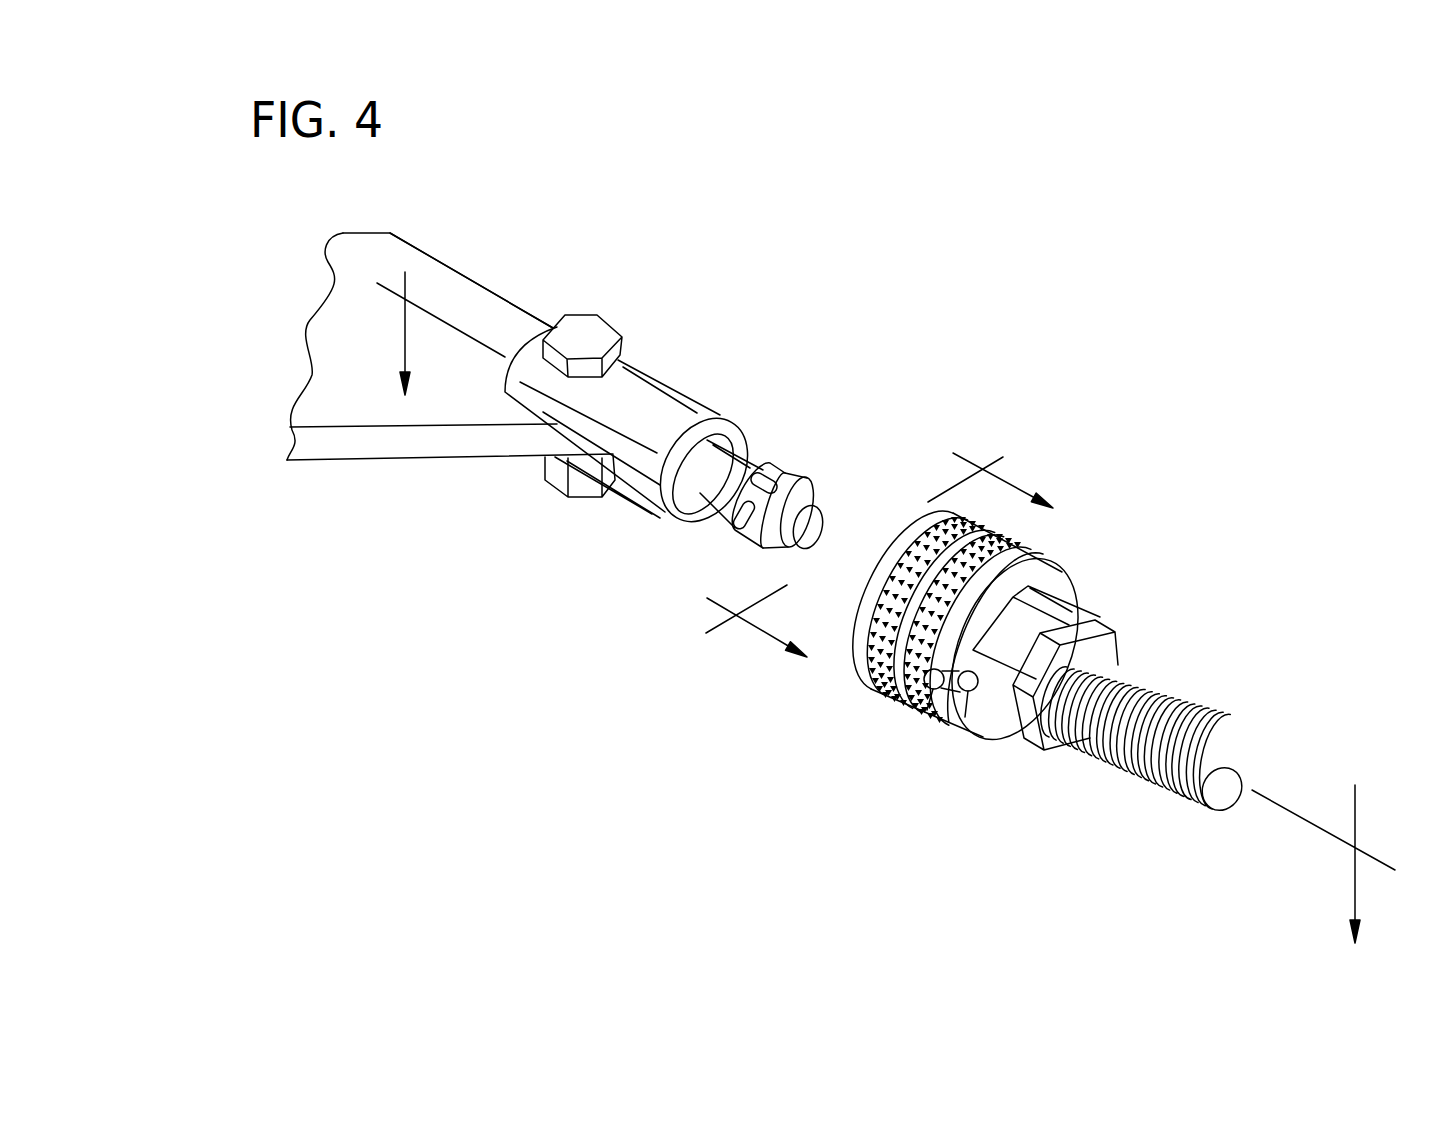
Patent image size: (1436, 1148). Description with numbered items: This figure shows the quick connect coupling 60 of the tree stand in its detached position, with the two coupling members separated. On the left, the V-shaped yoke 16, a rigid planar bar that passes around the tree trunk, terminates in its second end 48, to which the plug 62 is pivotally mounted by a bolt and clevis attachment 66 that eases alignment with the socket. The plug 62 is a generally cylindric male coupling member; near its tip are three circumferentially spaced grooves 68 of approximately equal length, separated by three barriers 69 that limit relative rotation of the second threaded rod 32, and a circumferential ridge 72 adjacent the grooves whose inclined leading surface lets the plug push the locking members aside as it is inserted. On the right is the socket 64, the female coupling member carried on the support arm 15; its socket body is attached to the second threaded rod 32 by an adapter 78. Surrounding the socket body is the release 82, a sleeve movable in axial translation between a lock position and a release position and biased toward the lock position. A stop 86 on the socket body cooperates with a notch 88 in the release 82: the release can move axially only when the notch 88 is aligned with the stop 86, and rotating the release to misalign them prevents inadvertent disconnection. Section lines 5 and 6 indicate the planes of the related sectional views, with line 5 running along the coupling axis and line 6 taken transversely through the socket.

The section line 5- 5 is at (888, 595).
The section line 6- 6 is at (867, 539).
The support arm 15 is at (1183, 709).
The V-shaped yoke 16 is at (307, 317).
The second threaded rod 32 is at (1153, 683).
The second end of the yoke 48 is at (482, 287).
The quick connect coupling 60 is at (984, 306).
The plug 62 is at (770, 438).
The socket 64 is at (1019, 522).
The bolt and clevis attachment 66 is at (605, 320).
The grooves 68 is at (783, 475).
The barriers 69 is at (780, 477).
The circumferential ridge 72 is at (757, 547).
The adapter 78 is at (1098, 615).
The release 82 is at (908, 525).
The stop 86 is at (965, 717).
The notch 88 is at (927, 710).